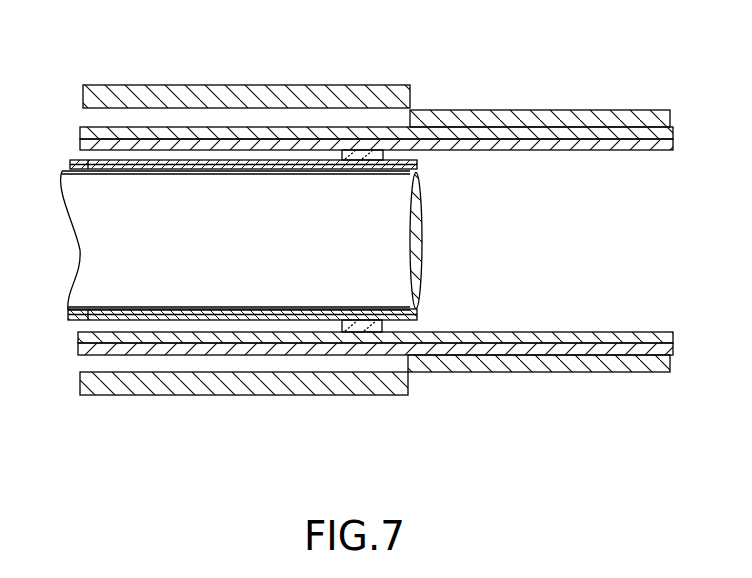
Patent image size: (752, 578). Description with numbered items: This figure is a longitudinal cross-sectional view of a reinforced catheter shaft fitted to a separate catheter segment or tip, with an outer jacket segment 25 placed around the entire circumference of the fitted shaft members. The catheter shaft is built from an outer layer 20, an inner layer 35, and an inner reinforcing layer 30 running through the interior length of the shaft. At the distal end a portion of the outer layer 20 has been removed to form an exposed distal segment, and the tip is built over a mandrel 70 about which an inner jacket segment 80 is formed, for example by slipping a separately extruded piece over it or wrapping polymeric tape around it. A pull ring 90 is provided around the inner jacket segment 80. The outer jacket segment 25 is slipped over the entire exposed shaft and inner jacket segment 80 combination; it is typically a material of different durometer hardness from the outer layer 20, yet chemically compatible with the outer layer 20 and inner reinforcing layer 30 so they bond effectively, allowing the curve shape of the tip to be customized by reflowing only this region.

The outer layer 20 is at (650, 118).
The outer jacket segment 25 is at (228, 100).
The inner reinforcing layer 30 is at (660, 136).
The inner layer 35 is at (602, 143).
The mandrel 70 is at (379, 218).
The inner jacket segment 80 is at (68, 316).
The pull ring 90 is at (355, 325).